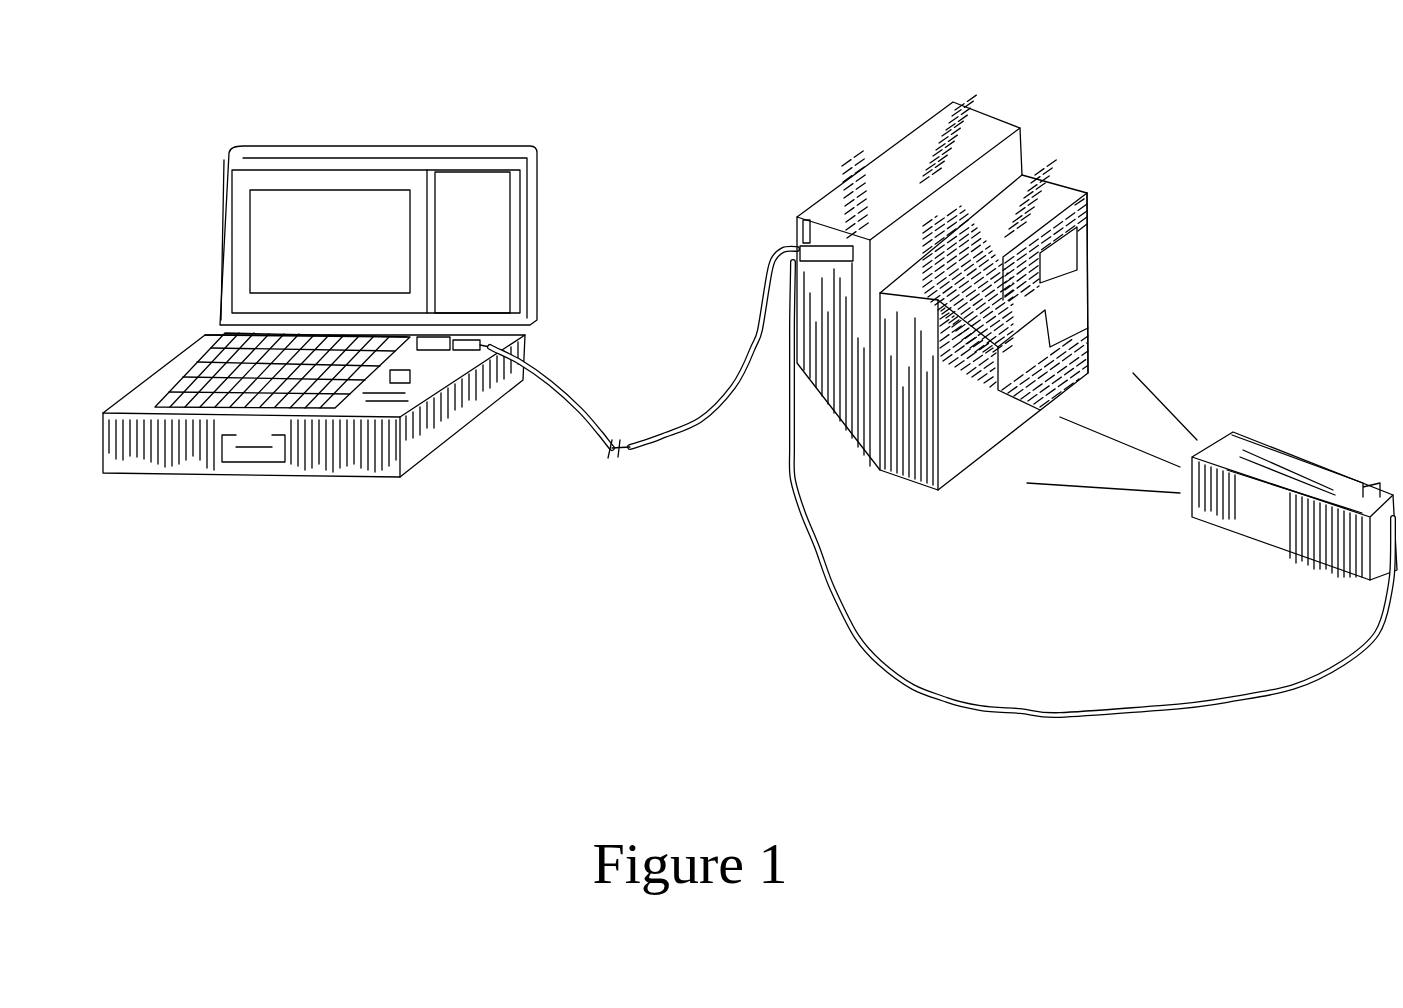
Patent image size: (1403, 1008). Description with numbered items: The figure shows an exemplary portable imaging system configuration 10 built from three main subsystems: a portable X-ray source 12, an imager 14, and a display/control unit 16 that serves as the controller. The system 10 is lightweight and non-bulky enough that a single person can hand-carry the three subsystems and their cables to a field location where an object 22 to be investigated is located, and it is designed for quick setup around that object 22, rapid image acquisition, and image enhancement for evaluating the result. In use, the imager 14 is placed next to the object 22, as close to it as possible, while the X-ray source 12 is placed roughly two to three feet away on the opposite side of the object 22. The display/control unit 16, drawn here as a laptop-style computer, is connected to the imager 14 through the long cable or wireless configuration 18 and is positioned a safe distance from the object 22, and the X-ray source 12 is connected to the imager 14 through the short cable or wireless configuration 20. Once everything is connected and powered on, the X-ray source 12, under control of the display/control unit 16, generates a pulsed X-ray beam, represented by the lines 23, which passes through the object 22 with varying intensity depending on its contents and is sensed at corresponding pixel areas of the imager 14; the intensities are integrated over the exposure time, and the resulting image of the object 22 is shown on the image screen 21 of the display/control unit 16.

The imaging system configuration 10 is at (190, 80).
The portable X-ray source 12 is at (1240, 540).
The imager 14 is at (886, 157).
The display/control unit 16 is at (148, 378).
The long cable or wireless configuration 18 is at (566, 398).
The short cable or wireless configuration 20 is at (1035, 707).
The image screen 21 is at (306, 230).
The object 22 is at (1090, 282).
The lines representing the pulsed X-ray beam 23 is at (1170, 407).